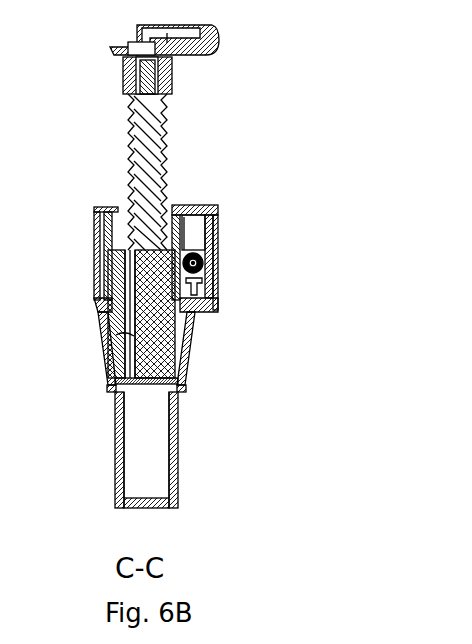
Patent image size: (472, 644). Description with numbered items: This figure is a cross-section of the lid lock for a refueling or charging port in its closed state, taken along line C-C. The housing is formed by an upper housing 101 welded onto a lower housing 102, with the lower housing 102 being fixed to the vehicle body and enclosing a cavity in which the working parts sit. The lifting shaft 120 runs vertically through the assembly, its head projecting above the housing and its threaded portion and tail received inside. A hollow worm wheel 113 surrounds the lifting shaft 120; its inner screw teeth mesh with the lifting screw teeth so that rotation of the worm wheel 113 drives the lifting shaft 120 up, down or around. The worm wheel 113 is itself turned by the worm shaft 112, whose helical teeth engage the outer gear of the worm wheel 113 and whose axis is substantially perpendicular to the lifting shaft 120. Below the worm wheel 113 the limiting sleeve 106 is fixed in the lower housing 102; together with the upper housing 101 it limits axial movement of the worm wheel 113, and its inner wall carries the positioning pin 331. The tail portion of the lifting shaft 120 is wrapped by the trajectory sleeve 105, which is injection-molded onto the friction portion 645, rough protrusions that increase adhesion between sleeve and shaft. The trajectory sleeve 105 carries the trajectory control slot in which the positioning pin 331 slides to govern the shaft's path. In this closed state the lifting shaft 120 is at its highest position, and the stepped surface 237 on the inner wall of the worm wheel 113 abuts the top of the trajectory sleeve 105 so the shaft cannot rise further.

The lifting shaft 120 is at (167, 118).
The upper housing 101 is at (94, 207).
The stepped surface 237 is at (104, 250).
The lower housing 102 is at (98, 302).
The friction portion 645 is at (112, 340).
The positioning pin 331 is at (115, 377).
The trajectory sleeve 105 is at (168, 342).
The limiting sleeve 106 is at (196, 306).
The worm shaft 112 is at (205, 252).
The worm wheel 113 is at (203, 284).